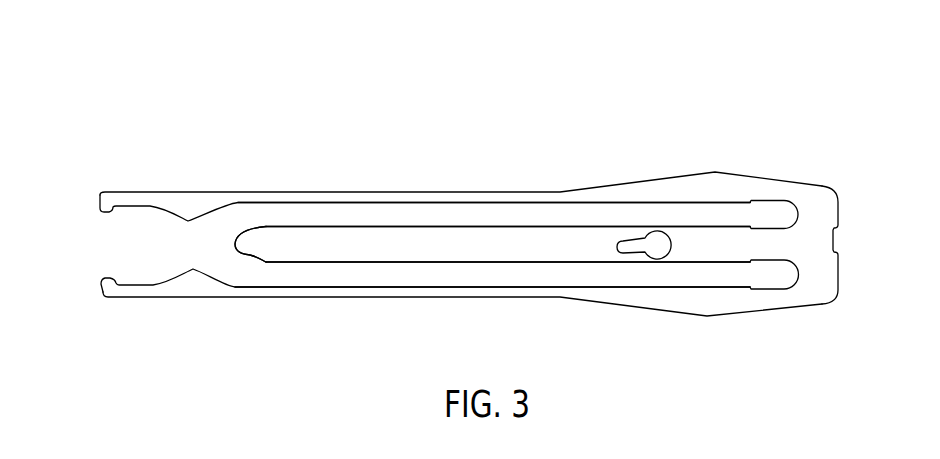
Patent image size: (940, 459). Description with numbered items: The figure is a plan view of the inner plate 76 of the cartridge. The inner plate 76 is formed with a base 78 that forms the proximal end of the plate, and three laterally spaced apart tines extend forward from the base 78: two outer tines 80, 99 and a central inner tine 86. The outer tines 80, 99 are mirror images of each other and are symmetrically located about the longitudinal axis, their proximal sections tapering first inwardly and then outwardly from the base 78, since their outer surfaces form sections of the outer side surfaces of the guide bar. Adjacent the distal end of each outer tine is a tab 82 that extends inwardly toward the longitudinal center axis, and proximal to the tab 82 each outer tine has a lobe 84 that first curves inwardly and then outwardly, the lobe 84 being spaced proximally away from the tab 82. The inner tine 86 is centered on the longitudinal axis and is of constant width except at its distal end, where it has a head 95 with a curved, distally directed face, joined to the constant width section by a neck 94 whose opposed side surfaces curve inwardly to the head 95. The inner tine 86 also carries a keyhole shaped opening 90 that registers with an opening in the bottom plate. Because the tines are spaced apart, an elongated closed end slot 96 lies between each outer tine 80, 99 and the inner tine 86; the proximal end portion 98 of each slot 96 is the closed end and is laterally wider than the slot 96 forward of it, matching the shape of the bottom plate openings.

The inner plate 76 is at (124, 90).
The base 78 is at (820, 203).
The outer tine 80 is at (358, 296).
The tab 82 is at (108, 280).
The lobe 84 is at (188, 221).
The inner tine 86 is at (392, 245).
The keyhole shaped opening 90 is at (657, 244).
The neck 94 is at (253, 243).
The head 95 is at (236, 246).
The closed end slot 96 is at (487, 214).
The proximal end portion of slot 98 is at (773, 213).
The outer tine 99 is at (329, 194).